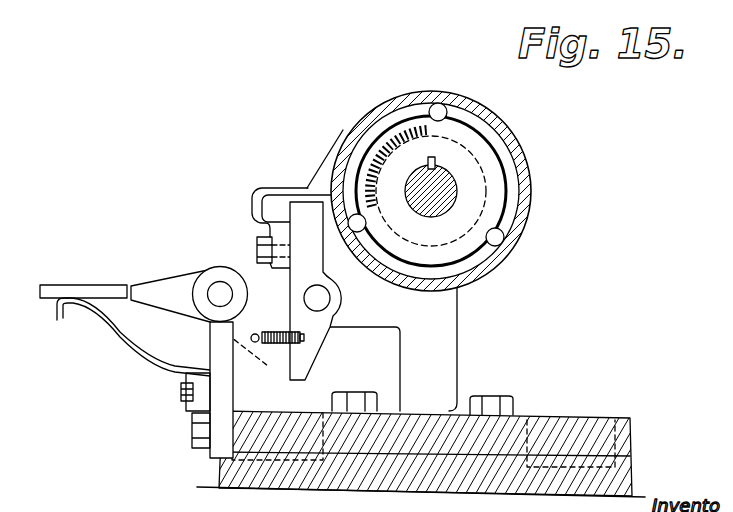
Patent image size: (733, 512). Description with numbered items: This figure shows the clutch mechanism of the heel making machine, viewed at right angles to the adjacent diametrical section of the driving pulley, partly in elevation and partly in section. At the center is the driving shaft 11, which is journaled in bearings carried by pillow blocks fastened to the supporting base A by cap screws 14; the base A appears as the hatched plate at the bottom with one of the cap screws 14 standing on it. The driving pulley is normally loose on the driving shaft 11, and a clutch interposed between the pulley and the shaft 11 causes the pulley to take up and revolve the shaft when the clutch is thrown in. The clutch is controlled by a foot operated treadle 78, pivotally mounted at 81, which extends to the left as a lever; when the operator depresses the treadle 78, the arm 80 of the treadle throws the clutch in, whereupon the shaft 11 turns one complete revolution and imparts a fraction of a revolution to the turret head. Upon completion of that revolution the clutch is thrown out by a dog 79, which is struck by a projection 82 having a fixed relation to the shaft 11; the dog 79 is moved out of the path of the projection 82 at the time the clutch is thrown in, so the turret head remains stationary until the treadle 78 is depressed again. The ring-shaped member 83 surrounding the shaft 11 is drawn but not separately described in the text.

The driving shaft 11 is at (458, 190).
The cap screws 14 is at (512, 409).
The foot operated treadle 78 is at (125, 271).
The dog 79 is at (341, 280).
The arm of the treadle 80 is at (275, 360).
The pivot of the treadle 81 is at (216, 278).
The projection 82 is at (320, 168).
The ratchet ring 83 is at (387, 102).
The supporting base A is at (588, 418).